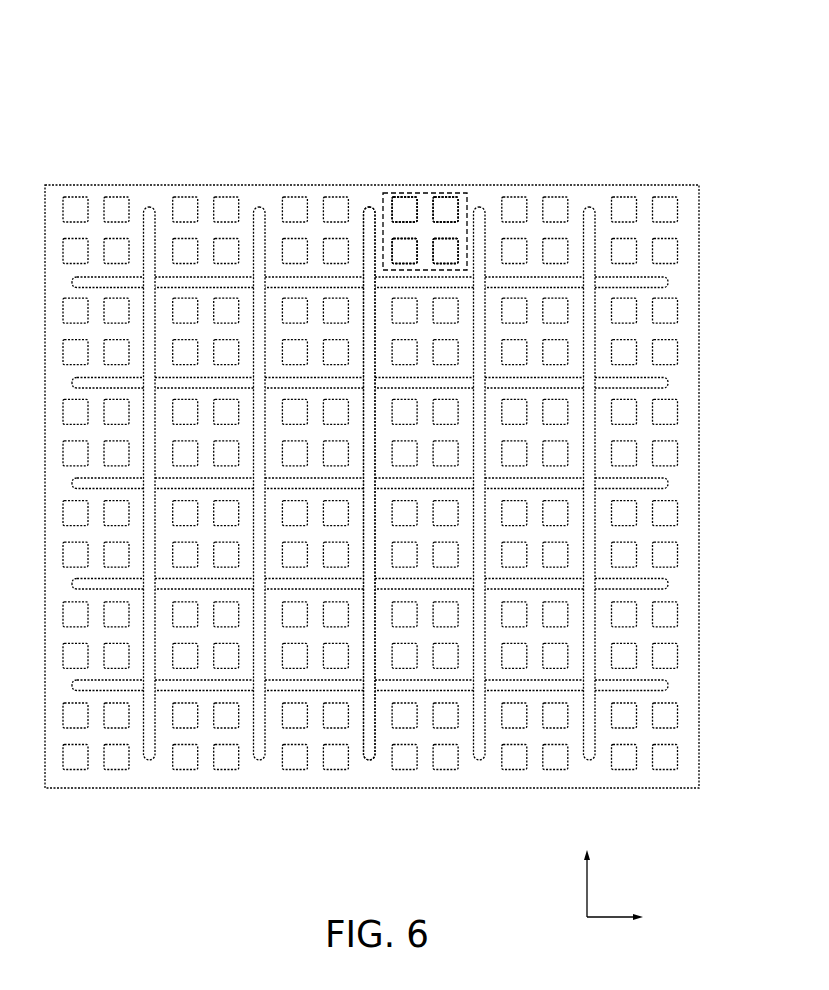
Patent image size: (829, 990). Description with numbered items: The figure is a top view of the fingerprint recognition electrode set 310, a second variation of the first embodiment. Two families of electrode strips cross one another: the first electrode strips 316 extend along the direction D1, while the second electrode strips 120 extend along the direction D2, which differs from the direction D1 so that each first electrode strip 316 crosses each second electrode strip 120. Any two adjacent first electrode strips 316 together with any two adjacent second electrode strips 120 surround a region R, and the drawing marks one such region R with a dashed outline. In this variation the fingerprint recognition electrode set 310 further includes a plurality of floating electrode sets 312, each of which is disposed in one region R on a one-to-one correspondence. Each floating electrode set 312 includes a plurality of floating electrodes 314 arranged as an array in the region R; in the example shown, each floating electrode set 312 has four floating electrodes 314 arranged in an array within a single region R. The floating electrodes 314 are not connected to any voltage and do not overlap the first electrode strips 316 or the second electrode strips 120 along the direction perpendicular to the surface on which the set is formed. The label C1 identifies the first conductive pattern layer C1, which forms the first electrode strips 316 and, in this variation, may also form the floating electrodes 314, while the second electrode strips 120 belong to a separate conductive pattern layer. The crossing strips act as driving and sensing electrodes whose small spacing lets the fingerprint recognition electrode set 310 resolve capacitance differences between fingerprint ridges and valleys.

The fingerprint recognition electrode set 310 is at (613, 115).
The second electrode strips 120 is at (645, 280).
The vertical line (data line) 316 is at (370, 207).
The floating electrode sets 312 is at (527, 110).
The floating electrodes 314 is at (400, 204).
The first conductive pattern layer C1 is at (459, 72).
The region R is at (470, 206).
The direction D1 is at (589, 870).
The direction D2 is at (630, 916).